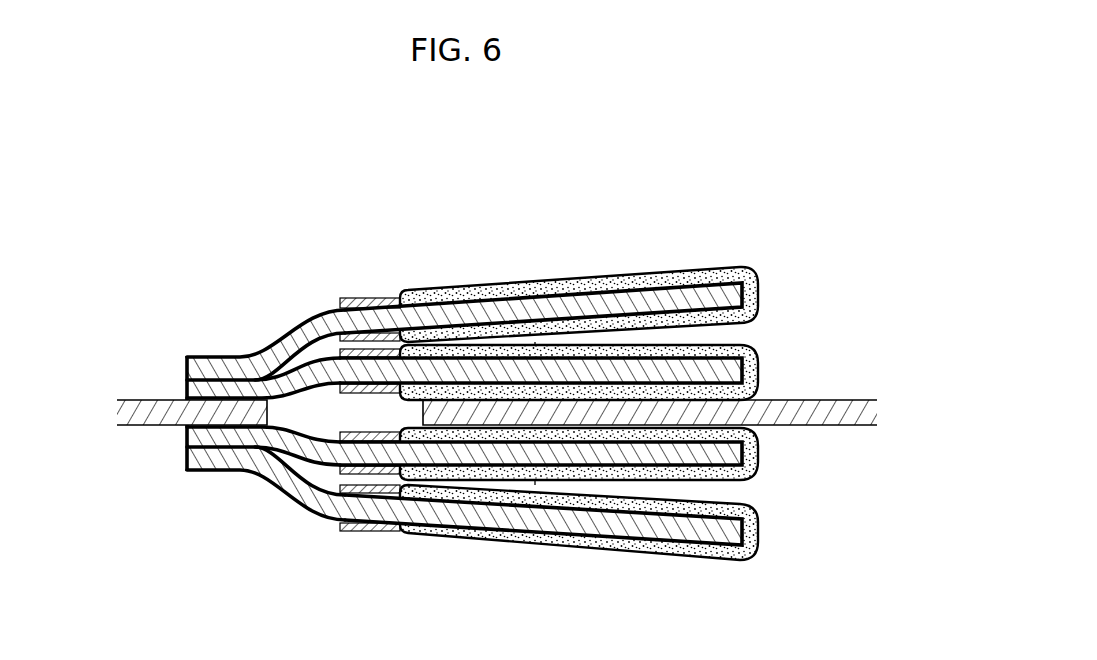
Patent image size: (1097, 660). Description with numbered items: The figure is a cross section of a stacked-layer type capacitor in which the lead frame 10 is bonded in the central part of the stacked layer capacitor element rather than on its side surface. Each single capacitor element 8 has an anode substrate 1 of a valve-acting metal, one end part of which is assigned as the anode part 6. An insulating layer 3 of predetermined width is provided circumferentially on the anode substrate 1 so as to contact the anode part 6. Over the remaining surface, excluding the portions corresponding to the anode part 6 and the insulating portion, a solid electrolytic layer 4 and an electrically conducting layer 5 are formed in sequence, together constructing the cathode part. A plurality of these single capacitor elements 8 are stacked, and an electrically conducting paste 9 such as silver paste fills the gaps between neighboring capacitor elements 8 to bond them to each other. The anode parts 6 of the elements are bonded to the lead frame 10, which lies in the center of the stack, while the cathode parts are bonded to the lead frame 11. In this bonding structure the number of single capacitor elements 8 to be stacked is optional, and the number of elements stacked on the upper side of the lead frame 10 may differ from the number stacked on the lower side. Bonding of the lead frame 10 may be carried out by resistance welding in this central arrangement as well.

The anode substrate 1 is at (293, 340).
The insulating layer 3 is at (357, 298).
The solid electrolytic layer 4 is at (550, 292).
The electrically conducting layer 5 is at (455, 290).
The anode part 6 is at (243, 482).
The single capacitor element 8 is at (683, 172).
The electrically conducting paste 9 is at (728, 337).
The lead frame 10 is at (162, 405).
The lead frame 11 is at (832, 412).